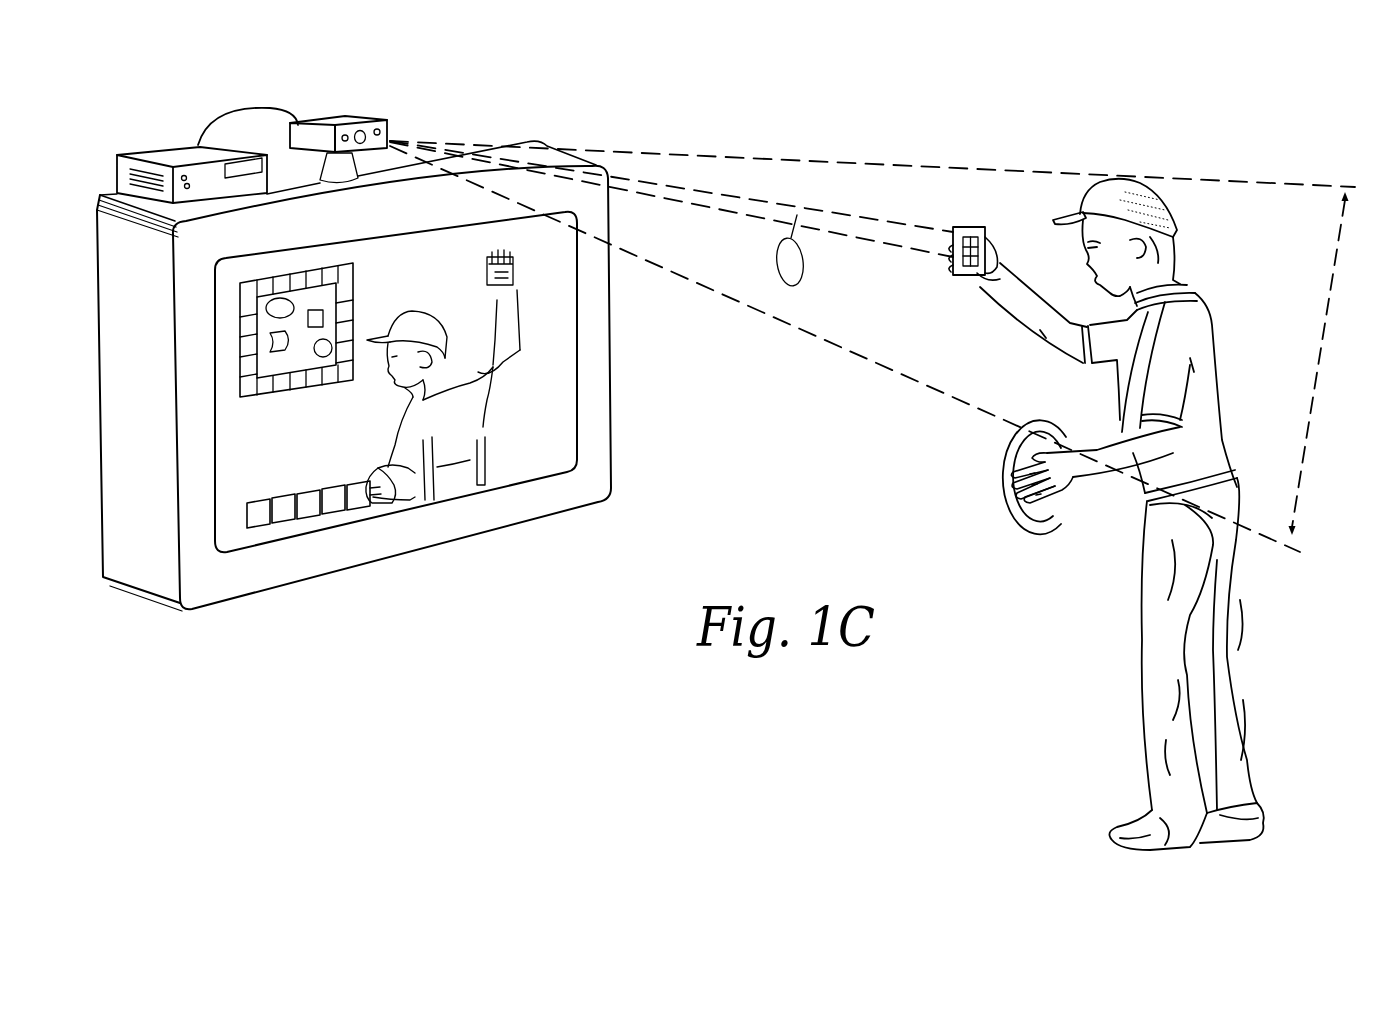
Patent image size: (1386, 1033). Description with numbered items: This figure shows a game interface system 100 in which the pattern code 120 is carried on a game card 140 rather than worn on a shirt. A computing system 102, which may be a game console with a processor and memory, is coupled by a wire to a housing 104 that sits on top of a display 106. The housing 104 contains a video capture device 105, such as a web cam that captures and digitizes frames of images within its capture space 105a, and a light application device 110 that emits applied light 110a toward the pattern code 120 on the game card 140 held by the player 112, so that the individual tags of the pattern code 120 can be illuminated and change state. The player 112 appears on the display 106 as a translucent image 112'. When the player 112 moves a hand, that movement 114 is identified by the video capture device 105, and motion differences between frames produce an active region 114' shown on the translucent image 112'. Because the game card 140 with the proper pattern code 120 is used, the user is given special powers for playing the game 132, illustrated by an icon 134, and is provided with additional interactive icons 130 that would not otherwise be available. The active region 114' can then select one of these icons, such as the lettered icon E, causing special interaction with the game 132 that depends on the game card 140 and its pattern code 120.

The game interface system 100 is at (1003, 116).
The computing system 102 is at (167, 150).
The housing 104 is at (336, 116).
The video capture device 105 is at (359, 124).
The capture space 105a is at (1298, 495).
The display 106 is at (540, 147).
The light application device 110 is at (380, 122).
The applied light 110a is at (797, 215).
The player 112 is at (1136, 514).
The translucent image 112' is at (467, 375).
The movement 114 is at (1005, 497).
The active region 114' is at (398, 543).
The pattern code 120 is at (993, 232).
The additional interactive icons 130 is at (324, 472).
The game 132 is at (226, 380).
The icon 134 is at (398, 262).
The game card 140 is at (970, 226).